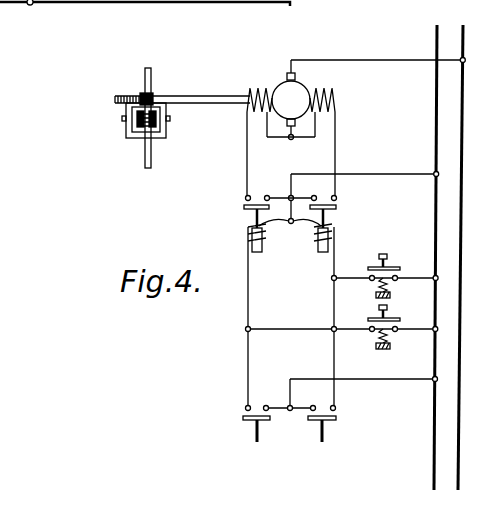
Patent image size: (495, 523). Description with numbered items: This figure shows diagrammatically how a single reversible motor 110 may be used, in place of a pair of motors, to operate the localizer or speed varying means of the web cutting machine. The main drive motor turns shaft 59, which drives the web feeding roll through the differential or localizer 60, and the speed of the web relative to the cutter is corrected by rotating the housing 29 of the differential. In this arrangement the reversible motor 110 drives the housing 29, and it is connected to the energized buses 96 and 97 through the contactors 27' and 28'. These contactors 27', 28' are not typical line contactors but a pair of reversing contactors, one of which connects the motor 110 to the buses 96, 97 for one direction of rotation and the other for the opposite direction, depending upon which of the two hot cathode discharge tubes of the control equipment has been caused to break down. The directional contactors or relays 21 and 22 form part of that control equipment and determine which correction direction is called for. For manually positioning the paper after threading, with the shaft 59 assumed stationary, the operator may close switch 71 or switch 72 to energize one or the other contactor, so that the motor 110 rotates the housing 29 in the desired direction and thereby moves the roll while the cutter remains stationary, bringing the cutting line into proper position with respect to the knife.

The shaft 59 is at (152, 78).
The differential or localizer 60 is at (105, 131).
The housing 29 is at (168, 130).
The single reversible motor 110 is at (279, 86).
The bus 96 is at (436, 134).
The bus 97 is at (462, 151).
The reversing contactor 27' is at (237, 228).
The reversing contactor 28' is at (345, 228).
The switch 72 is at (397, 271).
The switch 71 is at (397, 322).
The directional contactor 21 is at (237, 450).
The directional contactor 22 is at (366, 450).